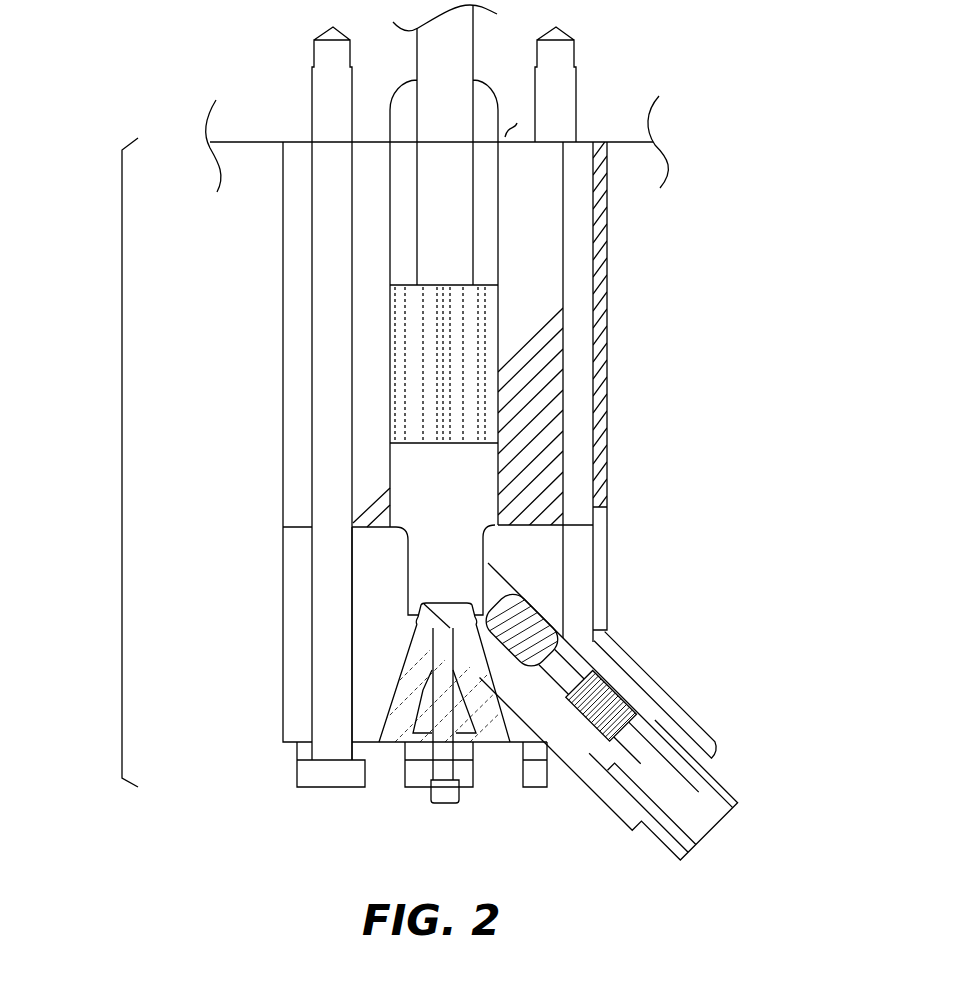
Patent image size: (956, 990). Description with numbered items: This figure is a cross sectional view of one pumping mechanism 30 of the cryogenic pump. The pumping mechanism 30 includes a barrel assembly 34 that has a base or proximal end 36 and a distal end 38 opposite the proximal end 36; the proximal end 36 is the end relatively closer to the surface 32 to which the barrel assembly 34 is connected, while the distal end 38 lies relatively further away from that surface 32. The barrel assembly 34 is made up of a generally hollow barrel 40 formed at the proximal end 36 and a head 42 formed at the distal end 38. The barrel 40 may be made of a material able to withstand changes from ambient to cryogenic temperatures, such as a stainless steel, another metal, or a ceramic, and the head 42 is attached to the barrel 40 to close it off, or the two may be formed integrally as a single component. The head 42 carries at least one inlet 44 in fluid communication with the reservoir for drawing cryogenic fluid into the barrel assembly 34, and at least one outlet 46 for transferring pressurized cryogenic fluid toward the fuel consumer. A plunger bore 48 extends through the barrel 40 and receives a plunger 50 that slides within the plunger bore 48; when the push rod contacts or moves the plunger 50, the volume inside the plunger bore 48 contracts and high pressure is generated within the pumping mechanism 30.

The pumping mechanism 30 is at (795, 140).
The surface 32 is at (623, 148).
The barrel assembly 34 is at (122, 477).
The proximal end 36 is at (246, 199).
The distal end 38 is at (252, 773).
The barrel 40 is at (543, 302).
The head 42 is at (387, 587).
The inlet 44 is at (385, 748).
The outlet 46 is at (483, 586).
The plunger bore 48 is at (448, 504).
The plunger 50 is at (458, 377).